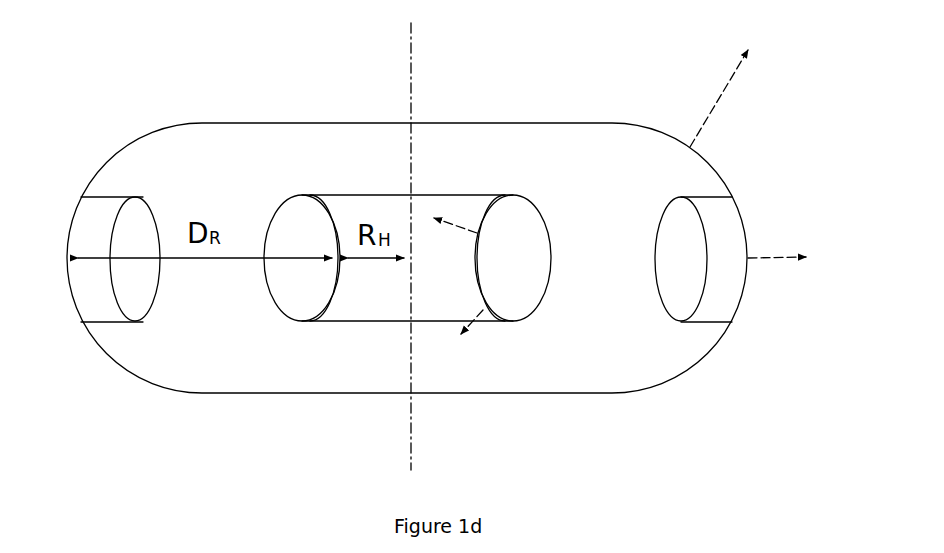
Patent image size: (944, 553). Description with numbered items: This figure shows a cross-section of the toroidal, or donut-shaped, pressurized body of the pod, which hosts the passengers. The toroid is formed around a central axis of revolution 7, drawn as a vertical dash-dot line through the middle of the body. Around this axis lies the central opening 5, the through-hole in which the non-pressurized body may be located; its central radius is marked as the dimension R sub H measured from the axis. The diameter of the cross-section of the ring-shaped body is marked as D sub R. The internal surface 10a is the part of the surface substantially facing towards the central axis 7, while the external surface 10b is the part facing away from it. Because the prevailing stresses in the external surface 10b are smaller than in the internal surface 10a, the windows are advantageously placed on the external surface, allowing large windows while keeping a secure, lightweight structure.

The central opening 5 is at (434, 170).
The central axis of revolution 7 is at (393, 246).
The internal surface 10a is at (468, 287).
The external surface 10b is at (746, 312).